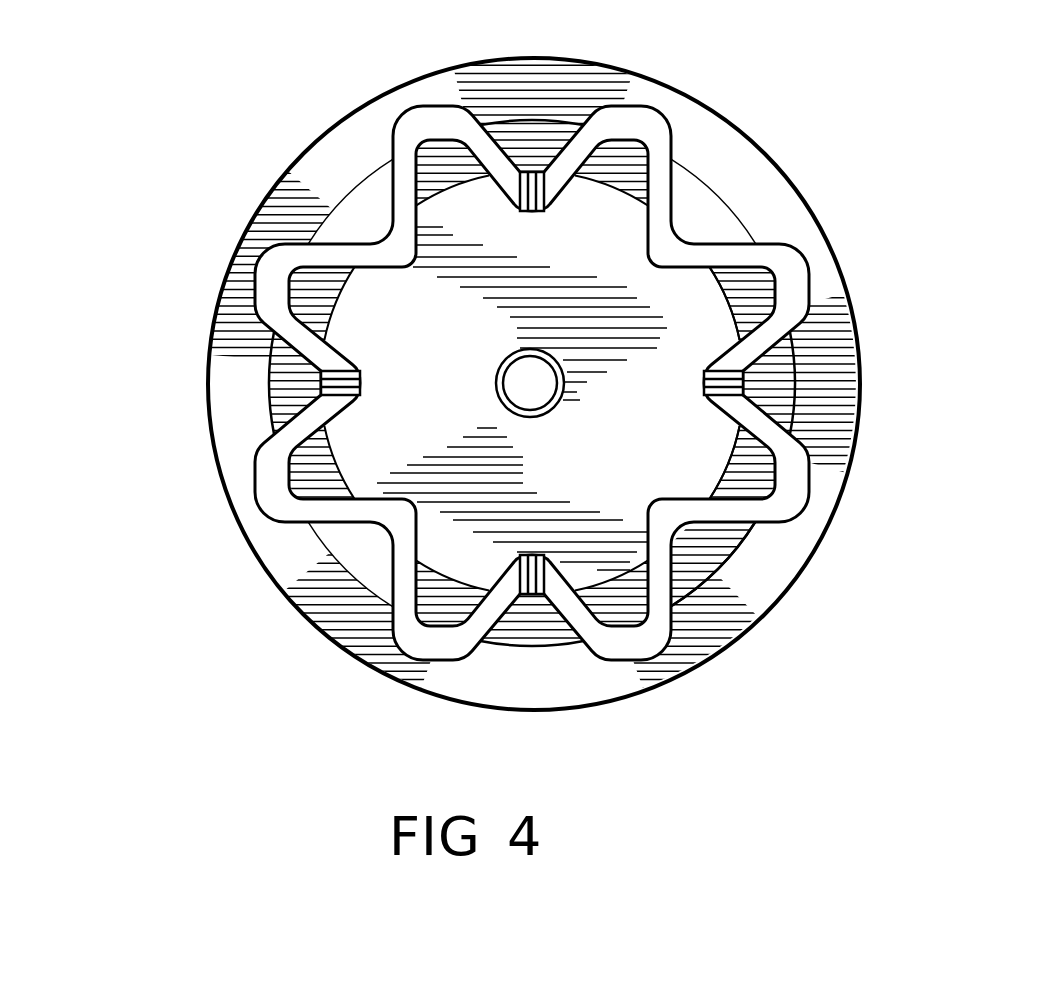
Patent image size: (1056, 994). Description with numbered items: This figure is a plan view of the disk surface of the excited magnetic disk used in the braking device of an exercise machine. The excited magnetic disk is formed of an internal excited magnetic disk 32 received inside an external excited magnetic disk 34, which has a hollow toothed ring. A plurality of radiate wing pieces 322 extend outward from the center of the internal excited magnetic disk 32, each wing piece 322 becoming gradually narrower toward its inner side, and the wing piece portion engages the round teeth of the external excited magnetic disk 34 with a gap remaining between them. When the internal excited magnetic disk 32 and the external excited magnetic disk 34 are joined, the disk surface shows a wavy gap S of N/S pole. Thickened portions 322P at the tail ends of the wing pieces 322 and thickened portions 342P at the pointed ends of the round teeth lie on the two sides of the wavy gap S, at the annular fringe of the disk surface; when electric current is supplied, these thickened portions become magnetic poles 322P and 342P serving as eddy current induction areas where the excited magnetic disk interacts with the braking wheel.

The wavy gap of N/S pole S is at (532, 343).
The internal excited magnetic disk 32 is at (213, 144).
The wing piece 322 is at (858, 462).
The thickened portion (magnetic pole) 322P is at (858, 257).
The external excited magnetic disk 34 is at (595, 385).
The thickened portion (magnetic pole) 342P is at (814, 597).